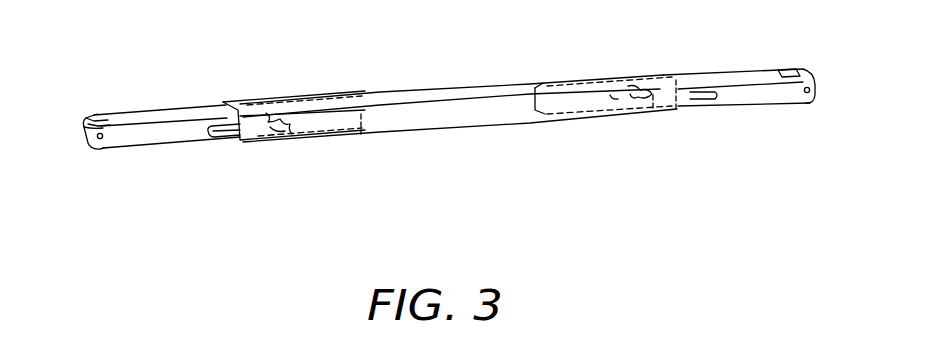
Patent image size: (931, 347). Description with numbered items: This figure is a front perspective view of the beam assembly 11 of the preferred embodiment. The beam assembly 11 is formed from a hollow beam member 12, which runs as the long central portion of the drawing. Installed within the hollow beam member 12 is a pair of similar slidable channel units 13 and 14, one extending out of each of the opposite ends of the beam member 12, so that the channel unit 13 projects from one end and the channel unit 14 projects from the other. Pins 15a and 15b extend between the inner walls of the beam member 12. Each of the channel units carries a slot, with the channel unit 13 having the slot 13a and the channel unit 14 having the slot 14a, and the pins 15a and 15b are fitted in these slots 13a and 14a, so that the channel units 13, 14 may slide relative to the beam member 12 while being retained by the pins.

The beam assembly 11 is at (432, 51).
The hollow beam member 12 is at (440, 118).
The slidable channel unit 13 is at (168, 110).
The slot 13a is at (213, 139).
The slidable channel unit 14 is at (775, 106).
The slot 14a is at (705, 100).
The pin 15a is at (283, 132).
The pin 15b is at (652, 100).